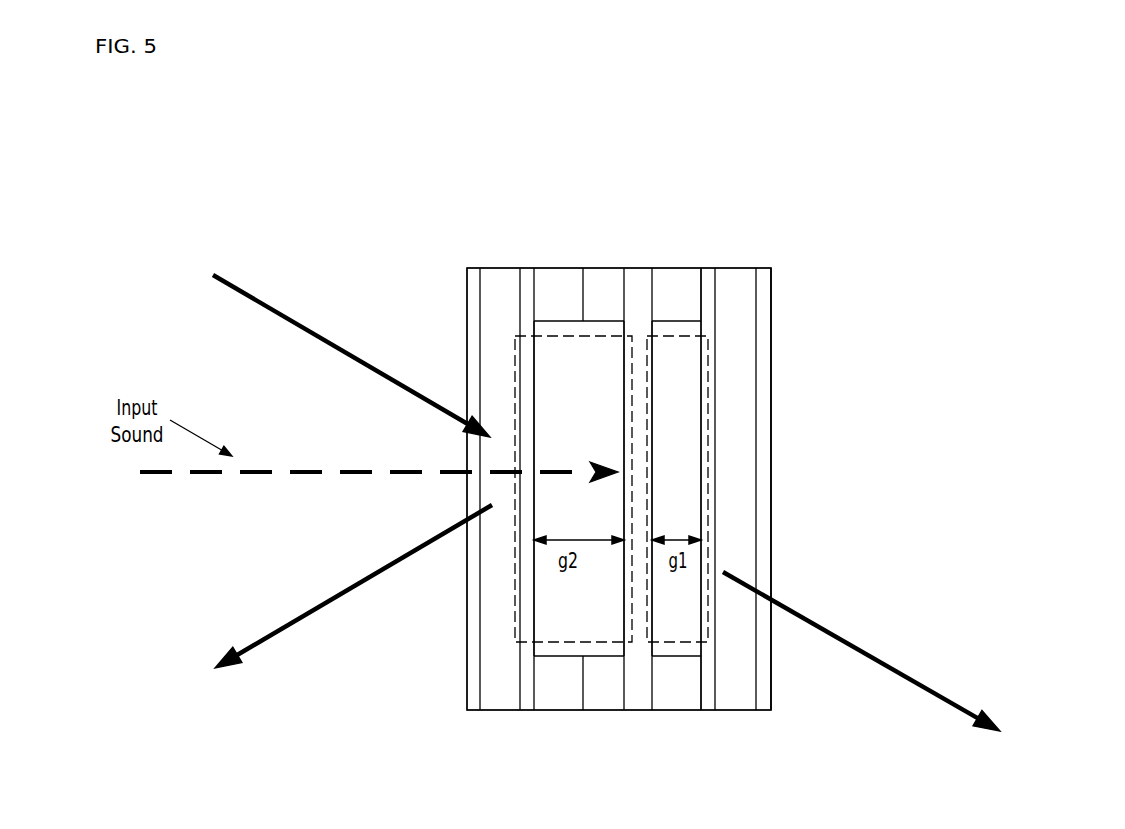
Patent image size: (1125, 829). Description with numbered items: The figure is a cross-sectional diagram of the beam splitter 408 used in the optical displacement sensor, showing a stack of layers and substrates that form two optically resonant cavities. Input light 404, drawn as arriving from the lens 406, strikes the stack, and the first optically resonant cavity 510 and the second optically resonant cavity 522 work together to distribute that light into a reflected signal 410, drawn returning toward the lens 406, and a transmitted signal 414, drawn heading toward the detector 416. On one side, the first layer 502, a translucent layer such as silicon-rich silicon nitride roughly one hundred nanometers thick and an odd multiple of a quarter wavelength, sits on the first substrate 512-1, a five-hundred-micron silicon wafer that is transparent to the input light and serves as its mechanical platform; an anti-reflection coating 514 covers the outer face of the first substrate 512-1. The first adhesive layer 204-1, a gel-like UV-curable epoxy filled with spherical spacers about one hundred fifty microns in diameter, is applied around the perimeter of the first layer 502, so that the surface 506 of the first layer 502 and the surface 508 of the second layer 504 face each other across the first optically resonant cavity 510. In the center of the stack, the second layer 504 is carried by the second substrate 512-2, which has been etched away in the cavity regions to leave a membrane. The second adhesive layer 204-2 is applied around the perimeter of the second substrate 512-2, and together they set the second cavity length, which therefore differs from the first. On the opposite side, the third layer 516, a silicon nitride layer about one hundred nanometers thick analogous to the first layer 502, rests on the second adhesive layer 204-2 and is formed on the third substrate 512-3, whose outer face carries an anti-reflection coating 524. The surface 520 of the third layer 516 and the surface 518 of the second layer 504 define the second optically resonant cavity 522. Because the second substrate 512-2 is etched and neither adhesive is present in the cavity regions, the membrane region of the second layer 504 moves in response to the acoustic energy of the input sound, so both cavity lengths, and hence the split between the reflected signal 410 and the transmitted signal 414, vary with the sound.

The first adhesive layer 204-1 is at (746, 490).
The second adhesive layer 204-2 is at (489, 489).
The input light 404 is at (319, 356).
The lens 406 is at (187, 458).
The beam splitter 408 is at (434, 109).
The reflected signal 410 is at (320, 586).
The transmitted signal 414 is at (861, 651).
The detector 416 is at (1050, 743).
The first layer 502 is at (645, 512).
The second layer 504 is at (724, 573).
The surface of first layer 506 is at (750, 489).
The surface of second layer 508 is at (752, 476).
The first optically resonant cavity 510 is at (782, 489).
The first substrate 512-1 is at (802, 489).
The second substrate 512-2 is at (558, 489).
The third substrate 512-3 is at (444, 489).
The anti-reflection coating 514 is at (809, 499).
The third layer 516 is at (475, 512).
The surface of second layer 518 is at (506, 475).
The surface of third layer 520 is at (461, 466).
The second optically resonant cavity 522 is at (510, 480).
The anti-reflection coating 524 is at (434, 499).